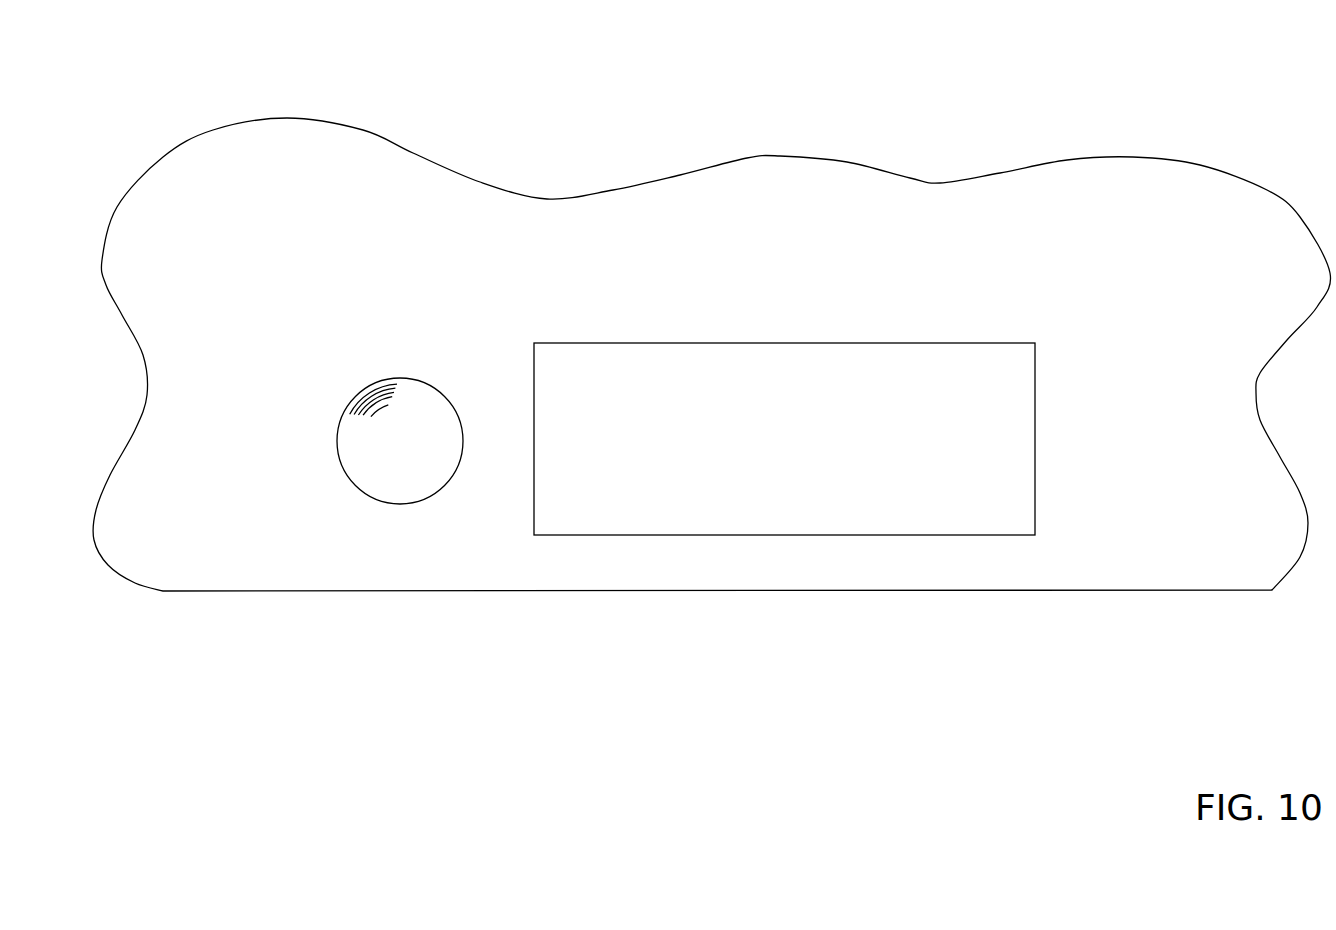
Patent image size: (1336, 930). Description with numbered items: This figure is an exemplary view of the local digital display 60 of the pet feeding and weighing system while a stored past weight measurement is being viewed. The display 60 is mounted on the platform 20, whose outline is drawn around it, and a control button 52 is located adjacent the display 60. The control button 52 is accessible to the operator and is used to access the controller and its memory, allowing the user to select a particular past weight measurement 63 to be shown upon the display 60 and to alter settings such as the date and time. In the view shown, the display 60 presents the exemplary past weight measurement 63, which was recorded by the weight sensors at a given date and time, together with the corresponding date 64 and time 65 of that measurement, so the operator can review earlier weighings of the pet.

The platform 20 is at (1147, 270).
The control button 52 is at (363, 470).
The local digital display 60 is at (1000, 535).
The past weight measurement 63 is at (735, 513).
The date 64 is at (627, 350).
The time 65 is at (925, 350).